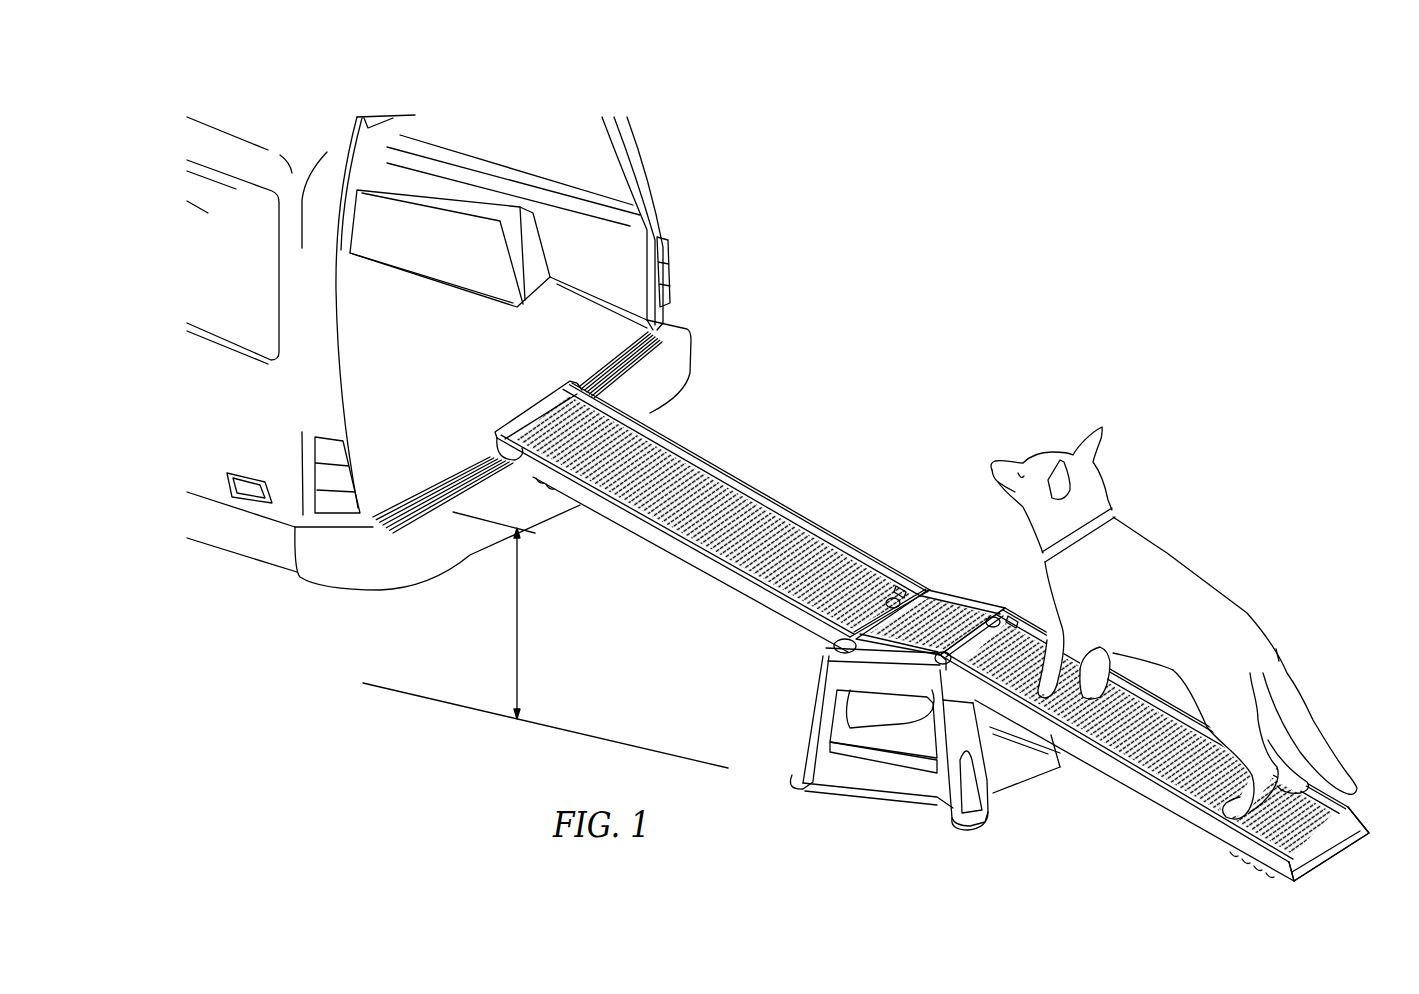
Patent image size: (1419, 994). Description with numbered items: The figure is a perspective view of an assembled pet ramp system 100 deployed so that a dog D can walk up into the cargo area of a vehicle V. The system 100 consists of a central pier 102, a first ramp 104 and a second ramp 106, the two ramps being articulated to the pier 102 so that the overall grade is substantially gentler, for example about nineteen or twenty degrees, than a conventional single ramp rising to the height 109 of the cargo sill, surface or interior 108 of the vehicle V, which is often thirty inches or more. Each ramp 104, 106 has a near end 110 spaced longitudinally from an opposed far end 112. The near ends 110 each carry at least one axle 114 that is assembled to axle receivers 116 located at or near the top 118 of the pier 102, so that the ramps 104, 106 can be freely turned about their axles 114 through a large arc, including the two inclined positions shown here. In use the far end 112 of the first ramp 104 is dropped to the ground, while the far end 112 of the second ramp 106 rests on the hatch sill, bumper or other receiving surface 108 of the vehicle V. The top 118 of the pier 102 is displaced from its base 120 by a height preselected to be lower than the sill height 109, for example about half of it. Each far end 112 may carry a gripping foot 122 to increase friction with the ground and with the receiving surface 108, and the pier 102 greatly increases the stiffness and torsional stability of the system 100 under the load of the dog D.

The pet ramp system 100 is at (905, 582).
The central pier 102 is at (923, 775).
The first ramp 104 is at (1111, 826).
The second ramp 106 is at (766, 456).
The cargo area sill, surface or interior 108 is at (615, 372).
The height 109 is at (519, 631).
The near end 110 is at (838, 648).
The far end 112 is at (513, 460).
The axle 114 is at (897, 597).
The axle receiver 116 is at (900, 588).
The top 118 is at (952, 610).
The base 120 is at (976, 828).
The gripping foot 122 is at (540, 479).
The vehicle V is at (250, 541).
The dog D is at (1172, 575).